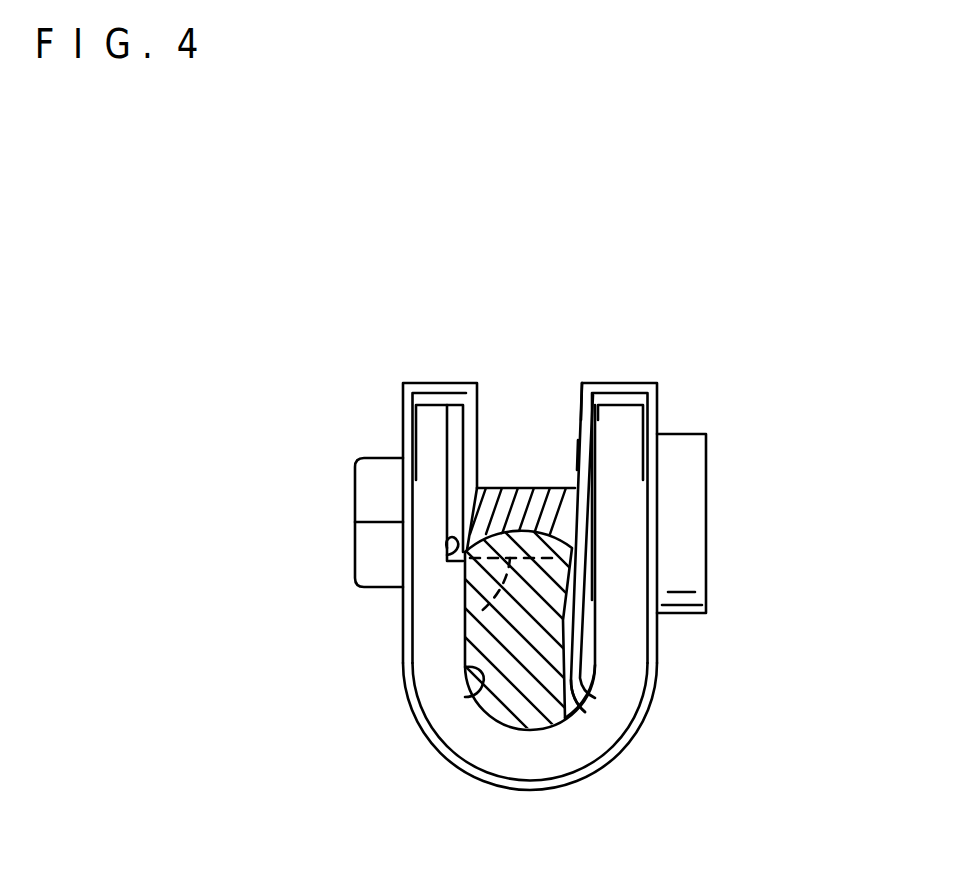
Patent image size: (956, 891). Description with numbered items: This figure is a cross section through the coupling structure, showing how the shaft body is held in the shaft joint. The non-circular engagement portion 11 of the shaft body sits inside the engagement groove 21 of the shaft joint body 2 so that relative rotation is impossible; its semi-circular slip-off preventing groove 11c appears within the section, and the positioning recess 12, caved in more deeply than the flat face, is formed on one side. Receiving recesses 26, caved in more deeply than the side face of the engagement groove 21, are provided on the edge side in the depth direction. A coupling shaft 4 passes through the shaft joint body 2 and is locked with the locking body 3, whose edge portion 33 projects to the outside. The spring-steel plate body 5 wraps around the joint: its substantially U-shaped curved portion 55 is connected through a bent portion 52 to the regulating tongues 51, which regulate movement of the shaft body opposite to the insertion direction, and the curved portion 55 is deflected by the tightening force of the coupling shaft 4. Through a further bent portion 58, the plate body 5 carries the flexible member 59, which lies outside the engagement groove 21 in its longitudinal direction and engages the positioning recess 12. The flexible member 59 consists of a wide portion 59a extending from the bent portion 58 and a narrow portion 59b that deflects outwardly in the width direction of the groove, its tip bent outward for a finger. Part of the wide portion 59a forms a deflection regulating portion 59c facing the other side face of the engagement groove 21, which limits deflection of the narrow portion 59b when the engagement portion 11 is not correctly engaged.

The shaft joint body 2 is at (453, 727).
The locking body 3 is at (716, 453).
The coupling shaft 4 is at (367, 487).
The plate body 5 is at (632, 751).
The engagement portion 11 is at (507, 700).
The slip-off preventing groove 11c is at (478, 614).
The positioning recess 12 is at (579, 708).
The engagement groove 21 is at (465, 697).
The receiving recess 26 is at (447, 555).
The edge portion 33 is at (672, 442).
The regulating tongue 51 is at (478, 512).
The bent portion 52 is at (437, 382).
The curved portion 55 is at (527, 782).
The bent portion 58 is at (622, 385).
The flexible member 59 is at (585, 642).
The wide portion 59a is at (581, 450).
The narrow portion 59b is at (574, 680).
The deflection regulating portion 59c is at (596, 414).